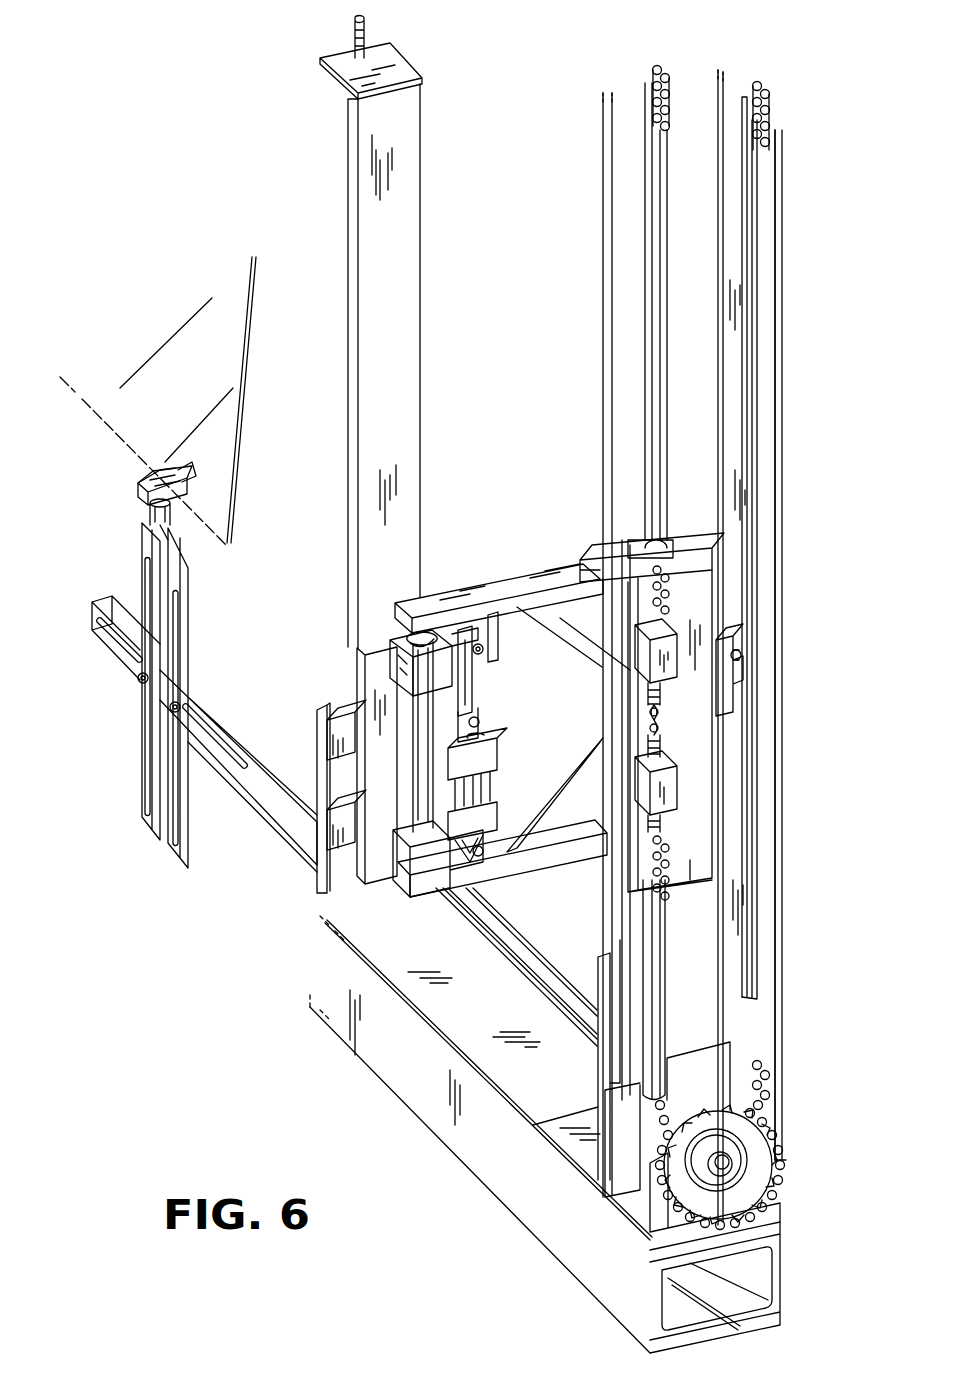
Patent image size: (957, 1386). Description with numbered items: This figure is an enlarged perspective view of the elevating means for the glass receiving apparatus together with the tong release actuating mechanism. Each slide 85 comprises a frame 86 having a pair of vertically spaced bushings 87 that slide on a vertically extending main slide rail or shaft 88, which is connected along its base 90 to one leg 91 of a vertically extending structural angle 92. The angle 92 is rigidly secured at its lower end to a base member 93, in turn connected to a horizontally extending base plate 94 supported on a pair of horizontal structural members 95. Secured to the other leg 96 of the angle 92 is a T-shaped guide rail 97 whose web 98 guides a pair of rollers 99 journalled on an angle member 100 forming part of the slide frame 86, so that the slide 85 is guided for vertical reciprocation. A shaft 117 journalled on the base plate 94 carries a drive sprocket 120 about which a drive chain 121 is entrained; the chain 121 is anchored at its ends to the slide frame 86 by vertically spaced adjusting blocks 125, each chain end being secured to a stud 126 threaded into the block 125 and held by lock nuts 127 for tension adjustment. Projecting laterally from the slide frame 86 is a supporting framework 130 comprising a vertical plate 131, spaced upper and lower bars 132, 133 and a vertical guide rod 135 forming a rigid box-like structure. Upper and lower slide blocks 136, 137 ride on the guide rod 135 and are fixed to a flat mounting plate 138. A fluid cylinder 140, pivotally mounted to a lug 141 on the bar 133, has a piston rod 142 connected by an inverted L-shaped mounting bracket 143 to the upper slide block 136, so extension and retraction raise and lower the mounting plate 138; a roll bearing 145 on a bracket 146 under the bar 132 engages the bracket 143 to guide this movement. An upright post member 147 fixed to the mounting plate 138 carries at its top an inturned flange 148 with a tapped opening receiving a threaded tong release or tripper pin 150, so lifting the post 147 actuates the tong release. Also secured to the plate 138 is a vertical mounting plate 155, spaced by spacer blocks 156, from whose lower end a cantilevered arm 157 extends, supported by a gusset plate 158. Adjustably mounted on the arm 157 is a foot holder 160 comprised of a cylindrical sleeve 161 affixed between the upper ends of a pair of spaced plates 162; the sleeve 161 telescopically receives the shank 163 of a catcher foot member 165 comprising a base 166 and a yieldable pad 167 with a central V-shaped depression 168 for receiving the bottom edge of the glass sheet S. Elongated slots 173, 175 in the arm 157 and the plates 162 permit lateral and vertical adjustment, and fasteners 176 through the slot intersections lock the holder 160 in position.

The slide 85 is at (722, 562).
The frame 86 is at (705, 613).
The bushings 87 is at (677, 543).
The main slide rail or shaft 88 is at (662, 1057).
The base 90 is at (630, 935).
The leg 91 is at (707, 944).
The structural angle 92 is at (788, 790).
The base member 93 is at (600, 1152).
The base plate 94 is at (474, 1050).
The structural members 95 is at (618, 1292).
The leg 96 is at (782, 1027).
The guide rail 97 is at (755, 988).
The web 98 is at (732, 963).
The rollers 99 is at (741, 655).
The angle member 100 is at (733, 687).
The shaft 117 is at (580, 1023).
The drive sprocket 120 is at (750, 1140).
The drive chain 121 is at (650, 82).
The adjusting blocks 125 is at (642, 655).
The stud 126 is at (661, 730).
The lock nuts 127 is at (661, 690).
The supporting framework 130 is at (458, 915).
The vertical plate 131 is at (590, 537).
The upper bar 132 is at (440, 597).
The lower bar 133 is at (579, 848).
The guide rod 135 is at (420, 723).
The upper slide block 136 is at (397, 657).
The lower slide block 137 is at (398, 892).
The mounting plate 138 is at (350, 668).
The fluid cylinder 140 is at (486, 800).
The lug 141 is at (480, 856).
The piston rod 142 is at (482, 748).
The mounting bracket 143 is at (474, 682).
The roll bearing 145 is at (490, 651).
The bracket 146 is at (496, 632).
The post member 147 is at (410, 248).
The inturned flange 148 is at (332, 78).
The tong release or tripper pin 150 is at (367, 26).
The mounting plate 155 is at (317, 867).
The spacer blocks 156 is at (343, 713).
The arm 157 is at (253, 785).
The gusset plate 158 is at (288, 760).
The foot holder 160 is at (197, 613).
The cylindrical sleeve 161 is at (152, 512).
The plates 162 is at (147, 540).
The shank 163 is at (177, 514).
The catcher foot member 165 is at (130, 477).
The base 166 is at (140, 495).
The pad 167 is at (143, 480).
The V-shaped depression 168 is at (175, 477).
The slots 173 is at (108, 630).
The slots 175 is at (172, 845).
The fasteners 176 is at (138, 683).
The glass sheet S is at (236, 357).